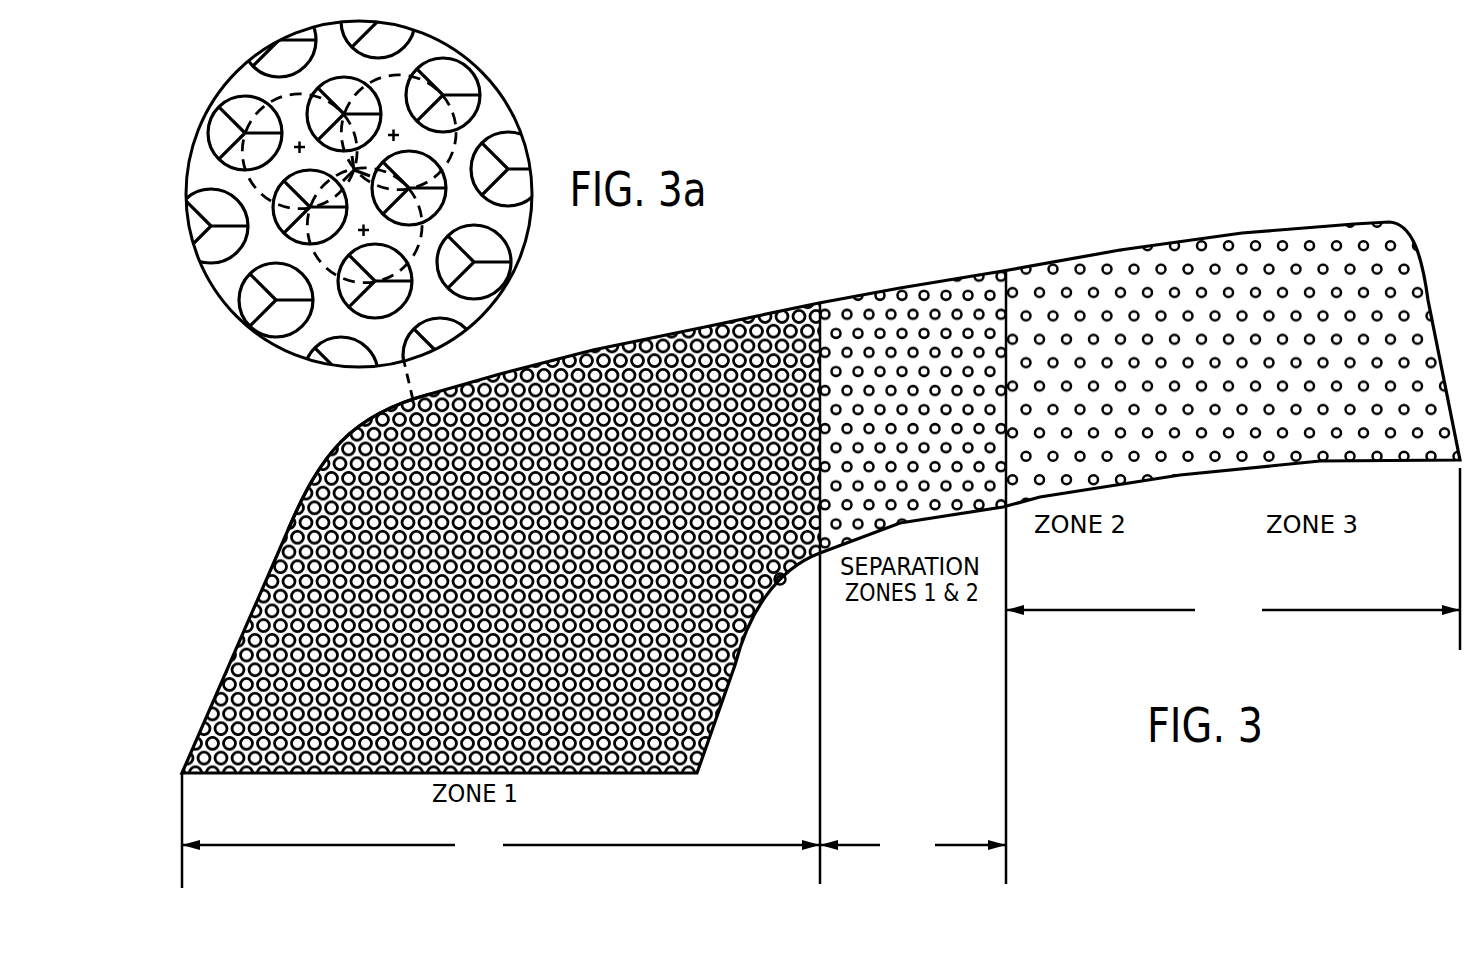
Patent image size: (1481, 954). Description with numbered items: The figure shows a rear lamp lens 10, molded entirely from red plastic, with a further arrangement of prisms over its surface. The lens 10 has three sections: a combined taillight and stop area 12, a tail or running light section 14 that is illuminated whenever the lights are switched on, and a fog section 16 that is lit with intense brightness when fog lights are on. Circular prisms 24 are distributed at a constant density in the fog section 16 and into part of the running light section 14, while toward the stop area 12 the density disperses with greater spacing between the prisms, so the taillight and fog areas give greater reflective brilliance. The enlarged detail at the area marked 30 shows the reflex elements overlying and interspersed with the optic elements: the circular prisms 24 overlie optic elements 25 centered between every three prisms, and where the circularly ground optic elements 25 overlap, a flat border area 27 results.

In FIG. 3, the lens 10 is at (875, 276).
In FIG. 3, the combined taillight and stop area 12 is at (1233, 559).
In FIG. 3, the tail or running light section 14 is at (913, 577).
In FIG. 3, the fog section 16 is at (501, 830).
In FIG. 3, the circular prisms 24 is at (789, 577).
In FIG. 3A, the circular prisms 24 is at (246, 308).
In FIG. 3A, the optic elements 25 is at (248, 178).
In FIG. 3A, the flat border area 27 is at (458, 128).
In FIG. 3, the rounded edge of web 30 is at (435, 394).